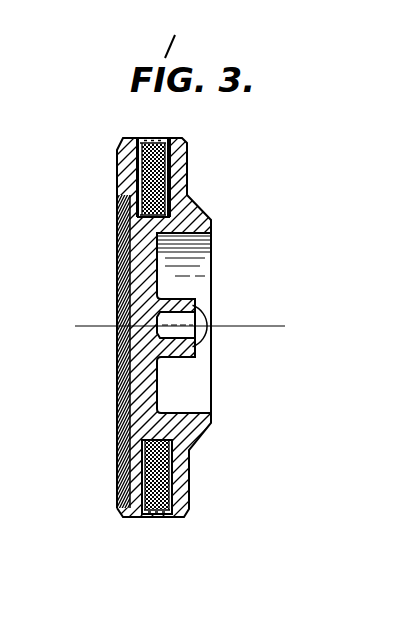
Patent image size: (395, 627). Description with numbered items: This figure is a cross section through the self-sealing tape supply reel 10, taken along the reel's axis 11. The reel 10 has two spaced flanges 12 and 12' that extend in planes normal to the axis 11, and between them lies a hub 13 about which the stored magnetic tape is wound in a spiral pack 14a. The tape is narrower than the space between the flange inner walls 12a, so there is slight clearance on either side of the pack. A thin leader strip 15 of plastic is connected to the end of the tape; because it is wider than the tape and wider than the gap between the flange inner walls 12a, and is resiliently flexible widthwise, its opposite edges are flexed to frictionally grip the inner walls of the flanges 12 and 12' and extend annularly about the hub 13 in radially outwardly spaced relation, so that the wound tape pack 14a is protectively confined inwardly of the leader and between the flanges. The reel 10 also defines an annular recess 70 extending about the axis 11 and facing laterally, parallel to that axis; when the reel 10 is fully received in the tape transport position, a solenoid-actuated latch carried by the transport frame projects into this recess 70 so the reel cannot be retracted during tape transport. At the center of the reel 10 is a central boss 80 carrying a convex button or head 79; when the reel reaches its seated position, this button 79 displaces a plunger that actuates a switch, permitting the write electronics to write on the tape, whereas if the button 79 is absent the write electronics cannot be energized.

The supply reel 10 is at (98, 464).
The axis 11 is at (260, 330).
The flange 12 is at (90, 334).
The flange 12' is at (204, 177).
The flange inner walls 12a is at (145, 187).
The hub 13 is at (198, 220).
The spiral pack 14a is at (170, 492).
The leader strip 15 is at (155, 137).
The annular recess 70 is at (170, 388).
The button 79 is at (207, 320).
The central boss 80 is at (203, 286).